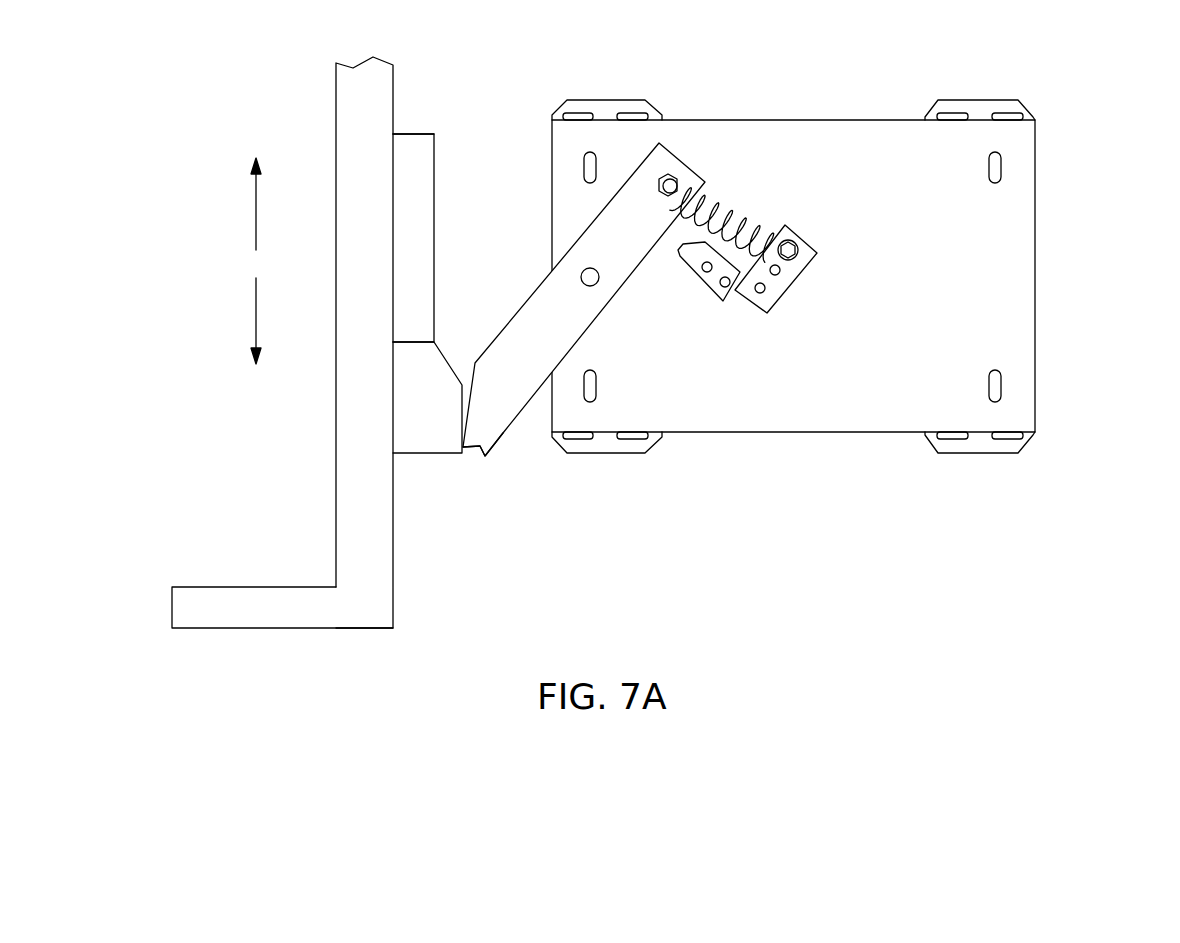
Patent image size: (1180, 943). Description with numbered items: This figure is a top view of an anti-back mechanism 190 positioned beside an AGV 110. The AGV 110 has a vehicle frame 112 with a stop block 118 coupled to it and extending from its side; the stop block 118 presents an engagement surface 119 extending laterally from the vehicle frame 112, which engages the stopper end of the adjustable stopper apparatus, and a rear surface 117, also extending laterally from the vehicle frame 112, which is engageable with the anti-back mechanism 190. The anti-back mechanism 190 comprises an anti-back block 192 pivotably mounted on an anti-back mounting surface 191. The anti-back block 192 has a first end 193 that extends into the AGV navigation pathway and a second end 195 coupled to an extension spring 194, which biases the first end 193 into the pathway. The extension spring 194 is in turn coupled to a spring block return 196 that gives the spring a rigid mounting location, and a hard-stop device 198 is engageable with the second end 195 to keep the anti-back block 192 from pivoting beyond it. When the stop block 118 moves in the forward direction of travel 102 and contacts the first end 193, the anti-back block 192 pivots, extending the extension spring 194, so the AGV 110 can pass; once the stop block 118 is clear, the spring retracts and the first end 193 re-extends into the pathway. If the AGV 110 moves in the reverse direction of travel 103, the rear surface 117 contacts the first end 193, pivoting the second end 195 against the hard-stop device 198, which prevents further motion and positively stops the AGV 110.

The forward direction of travel 102 is at (256, 315).
The reverse direction of travel 103 is at (256, 212).
The AGV 110 is at (287, 437).
The vehicle frame 112 is at (343, 163).
The rear surface 117 is at (410, 133).
The stop block 118 is at (434, 261).
The engagement surface 119 is at (423, 455).
The anti-back mechanism 190 is at (1072, 222).
The anti-back mounting surface 191 is at (992, 290).
The anti-back block 192 is at (637, 187).
The first end 193 is at (500, 425).
The extension spring 194 is at (758, 208).
The second end 195 is at (660, 157).
The spring block return 196 is at (793, 270).
The hard-stop device 198 is at (708, 282).